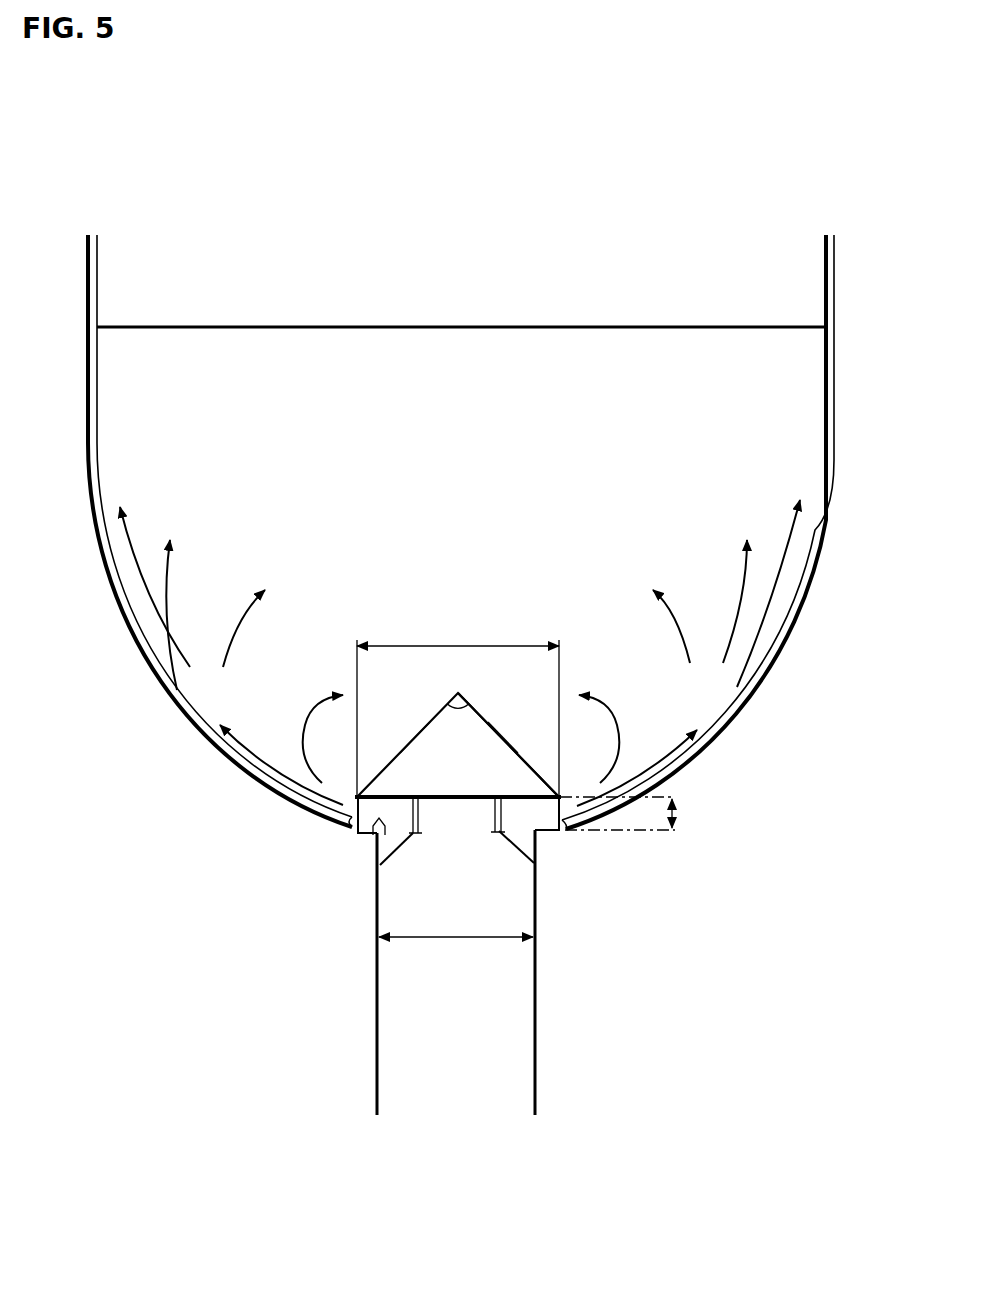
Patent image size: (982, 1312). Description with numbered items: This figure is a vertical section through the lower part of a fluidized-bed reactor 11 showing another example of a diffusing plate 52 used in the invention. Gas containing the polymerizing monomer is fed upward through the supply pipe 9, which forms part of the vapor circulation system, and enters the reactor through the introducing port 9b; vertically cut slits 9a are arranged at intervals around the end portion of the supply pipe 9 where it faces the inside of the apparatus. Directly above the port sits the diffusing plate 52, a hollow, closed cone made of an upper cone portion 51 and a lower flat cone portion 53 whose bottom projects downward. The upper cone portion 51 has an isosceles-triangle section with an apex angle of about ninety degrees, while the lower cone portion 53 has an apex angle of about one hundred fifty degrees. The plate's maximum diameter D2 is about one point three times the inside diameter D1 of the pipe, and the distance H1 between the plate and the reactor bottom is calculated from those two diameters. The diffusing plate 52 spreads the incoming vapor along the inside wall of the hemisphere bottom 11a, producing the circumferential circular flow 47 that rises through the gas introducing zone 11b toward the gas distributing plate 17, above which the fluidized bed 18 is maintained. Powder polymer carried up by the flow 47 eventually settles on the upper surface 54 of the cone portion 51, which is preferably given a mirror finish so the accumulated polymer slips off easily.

The supply pipe 9 is at (538, 1000).
The slits 9a is at (345, 830).
The introducing port 9b is at (372, 836).
The fluidized-bed reactor 11 is at (514, 186).
The hemisphere bottom 11a is at (292, 805).
The gas introducing zone 11b is at (237, 366).
The gas distributing plate 17 is at (321, 329).
The fluidized-bed 18 is at (222, 294).
The circumferential circular flow 47 is at (172, 652).
The upper cone portion 51 is at (441, 712).
The diffusing plate 52 is at (497, 721).
The lower flat cone portion 53 is at (483, 800).
The upper surface 54 is at (410, 742).
The inside diameter of the pipe D1 is at (456, 954).
The maximum diameter of the diffusing plate D2 is at (458, 706).
The distance between the diffusing plate and the reactor bottom H1 is at (637, 813).